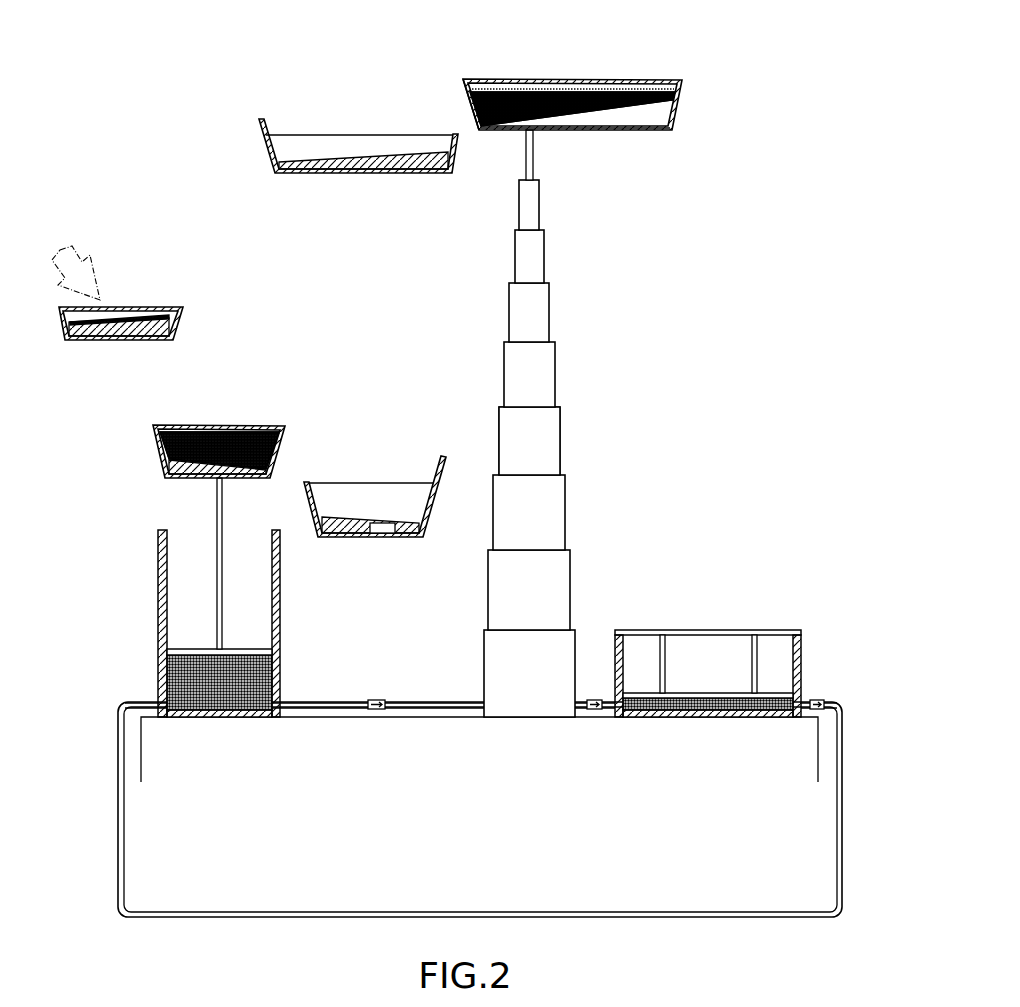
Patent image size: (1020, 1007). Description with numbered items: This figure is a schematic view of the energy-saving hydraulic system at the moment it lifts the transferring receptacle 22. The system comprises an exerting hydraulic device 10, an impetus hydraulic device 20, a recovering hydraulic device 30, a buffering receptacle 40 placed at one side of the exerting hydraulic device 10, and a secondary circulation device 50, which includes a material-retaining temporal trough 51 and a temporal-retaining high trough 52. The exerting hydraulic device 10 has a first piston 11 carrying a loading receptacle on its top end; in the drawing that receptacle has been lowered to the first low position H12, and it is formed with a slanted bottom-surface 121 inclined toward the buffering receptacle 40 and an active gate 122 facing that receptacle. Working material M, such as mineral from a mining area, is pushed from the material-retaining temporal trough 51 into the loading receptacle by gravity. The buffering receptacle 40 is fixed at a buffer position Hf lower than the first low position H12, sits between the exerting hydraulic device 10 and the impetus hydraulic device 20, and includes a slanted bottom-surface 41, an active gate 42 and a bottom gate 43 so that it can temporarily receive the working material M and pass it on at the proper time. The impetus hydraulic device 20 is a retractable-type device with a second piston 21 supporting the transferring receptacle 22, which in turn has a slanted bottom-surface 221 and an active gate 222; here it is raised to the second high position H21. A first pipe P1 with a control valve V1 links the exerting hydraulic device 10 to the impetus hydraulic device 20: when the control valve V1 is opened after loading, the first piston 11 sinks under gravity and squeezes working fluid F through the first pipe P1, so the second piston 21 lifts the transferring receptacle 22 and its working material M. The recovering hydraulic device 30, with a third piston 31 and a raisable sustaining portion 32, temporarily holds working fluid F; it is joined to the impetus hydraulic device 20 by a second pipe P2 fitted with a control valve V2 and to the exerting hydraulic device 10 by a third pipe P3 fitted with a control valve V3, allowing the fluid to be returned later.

The exerting hydraulic device 10 is at (343, 562).
The first piston 11 is at (224, 511).
The slanted bottom-surface 121 is at (197, 470).
The active gate 122 is at (227, 490).
The impetus hydraulic device 20 is at (592, 381).
The second piston 21 is at (557, 298).
The transferring receptacle 22 is at (592, 112).
The slanted bottom-surface 221 is at (597, 128).
The active gate 222 is at (468, 101).
The recovering hydraulic device 30 is at (732, 632).
The third piston 31 is at (756, 668).
The sustaining portion 32 is at (715, 630).
The buffering receptacle 40 is at (392, 493).
The slanted bottom-surface 41 is at (350, 528).
The active gate 42 is at (432, 475).
The bottom gate 43 is at (382, 532).
The secondary circulation device 50 is at (255, 226).
The material-retaining temporal trough 51 is at (124, 298).
The temporal-retaining high trough 52 is at (313, 146).
The working fluid F is at (190, 682).
The working material M is at (217, 430).
The first low position H12 is at (125, 479).
The second high position H21 is at (726, 131).
The buffer position Hf is at (453, 536).
The control valve V1 is at (370, 712).
The control valve V2 is at (590, 712).
The control valve V3 is at (820, 700).
The first pipe P1 is at (432, 712).
The second pipe P2 is at (612, 712).
The third pipe P3 is at (543, 910).